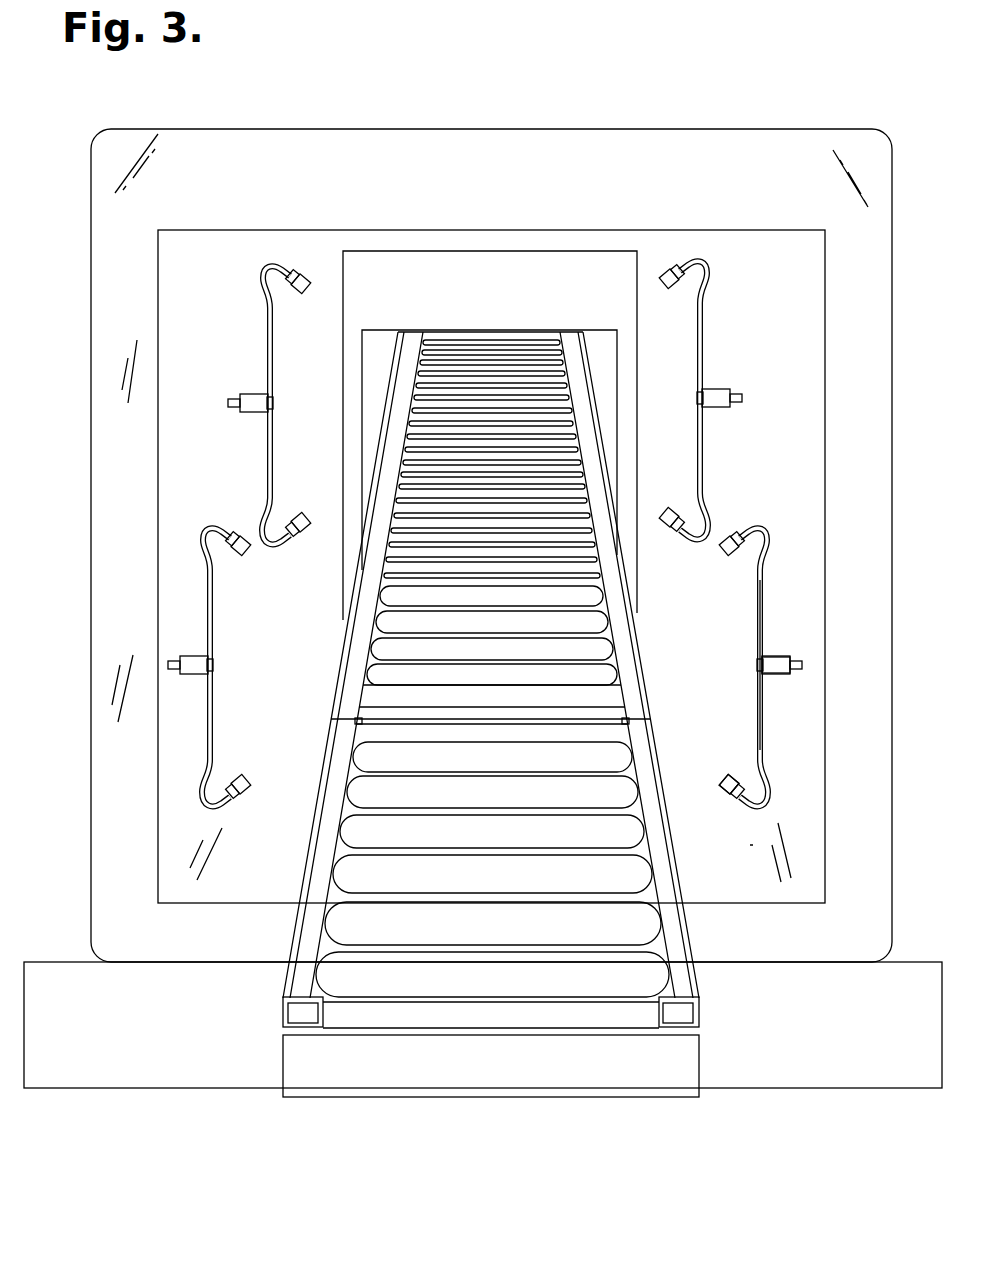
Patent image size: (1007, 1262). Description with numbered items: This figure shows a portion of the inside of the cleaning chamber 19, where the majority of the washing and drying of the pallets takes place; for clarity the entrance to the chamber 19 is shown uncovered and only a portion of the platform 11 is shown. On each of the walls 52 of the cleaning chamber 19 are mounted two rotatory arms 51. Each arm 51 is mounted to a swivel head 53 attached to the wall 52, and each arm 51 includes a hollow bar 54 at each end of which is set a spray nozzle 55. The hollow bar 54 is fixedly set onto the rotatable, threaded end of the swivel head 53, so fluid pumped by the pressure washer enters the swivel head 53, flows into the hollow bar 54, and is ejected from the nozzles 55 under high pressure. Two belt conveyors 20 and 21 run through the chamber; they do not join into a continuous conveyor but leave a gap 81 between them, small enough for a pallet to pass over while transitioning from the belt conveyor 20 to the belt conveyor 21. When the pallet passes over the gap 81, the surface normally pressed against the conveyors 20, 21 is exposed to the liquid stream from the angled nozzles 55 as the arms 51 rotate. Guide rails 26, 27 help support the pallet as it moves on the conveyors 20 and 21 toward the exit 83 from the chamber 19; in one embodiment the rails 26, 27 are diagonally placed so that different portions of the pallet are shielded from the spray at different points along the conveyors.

The cleaning chamber 19 is at (491, 510).
The platform 11 is at (52, 962).
The exit 83 is at (474, 331).
The guide rail 26 is at (411, 342).
The guide rail 27 is at (568, 342).
The belt conveyor 21 is at (540, 391).
The belt conveyor 20 is at (608, 762).
The gap 81 is at (340, 690).
The rotatory arm 51 is at (716, 318).
The wall 52 is at (498, 676).
The swivel head 53 is at (775, 651).
The hollow bar 54 is at (764, 575).
The spray nozzle 55 is at (742, 797).